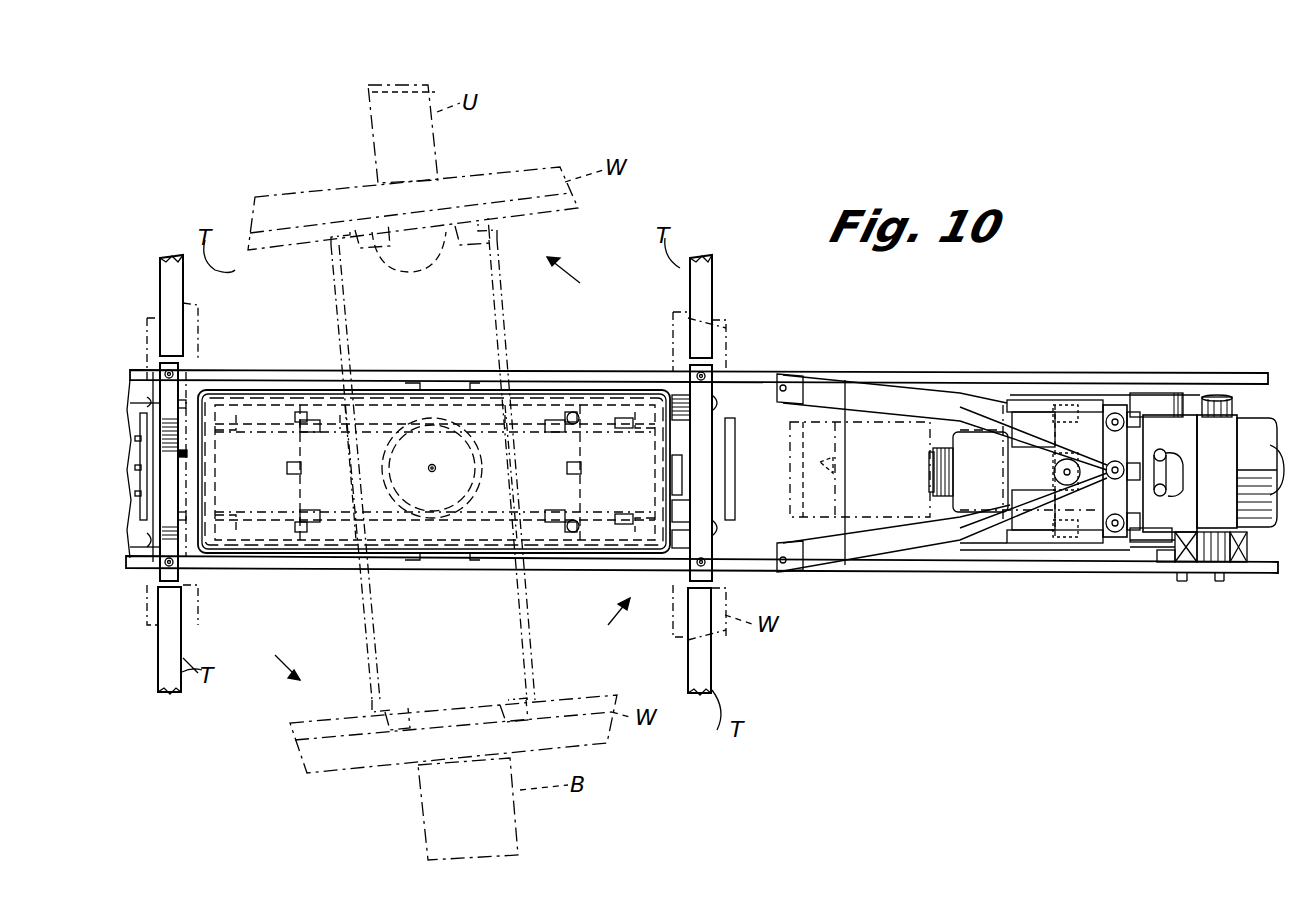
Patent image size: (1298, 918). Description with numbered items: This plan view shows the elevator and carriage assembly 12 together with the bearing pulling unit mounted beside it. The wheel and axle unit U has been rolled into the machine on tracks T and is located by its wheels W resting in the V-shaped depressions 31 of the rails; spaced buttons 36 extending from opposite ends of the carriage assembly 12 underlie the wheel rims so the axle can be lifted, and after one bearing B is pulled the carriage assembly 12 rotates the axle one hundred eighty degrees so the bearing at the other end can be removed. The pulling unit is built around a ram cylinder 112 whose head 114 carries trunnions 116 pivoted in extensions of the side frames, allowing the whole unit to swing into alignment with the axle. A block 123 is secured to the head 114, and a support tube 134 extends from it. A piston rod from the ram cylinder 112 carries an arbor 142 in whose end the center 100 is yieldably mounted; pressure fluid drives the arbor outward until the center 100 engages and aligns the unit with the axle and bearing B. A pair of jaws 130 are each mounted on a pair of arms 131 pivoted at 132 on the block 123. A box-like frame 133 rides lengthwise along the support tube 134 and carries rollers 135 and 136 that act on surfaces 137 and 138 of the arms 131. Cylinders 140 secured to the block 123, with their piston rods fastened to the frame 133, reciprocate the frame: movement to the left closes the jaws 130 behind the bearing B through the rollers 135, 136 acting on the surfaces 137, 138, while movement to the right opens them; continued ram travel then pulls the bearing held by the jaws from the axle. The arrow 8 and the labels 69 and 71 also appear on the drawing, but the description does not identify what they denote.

The frame 8 is at (984, 397).
The elevator and carriage assembly 12 is at (538, 388).
The V-shaped depressions 31 is at (565, 403).
The spaced buttons 36 is at (680, 532).
The rack 69 is at (186, 368).
The side post 71 is at (158, 373).
The center 100 is at (932, 473).
The ram cylinder 112 is at (1262, 418).
The head 114 is at (1262, 418).
The trunnions 116 is at (1216, 396).
The block 123 is at (1193, 415).
The jaws 130 is at (790, 404).
The arms 131 is at (875, 405).
The pivot 132 is at (1170, 473).
The box-like frame 133 is at (1118, 400).
The support tube 134 is at (968, 505).
The rollers 135 is at (1106, 472).
The rollers 136 is at (1128, 405).
The surfaces 137 is at (973, 438).
The surfaces 138 is at (1012, 402).
The cylinders 140 is at (1088, 400).
The arbor 142 is at (940, 446).